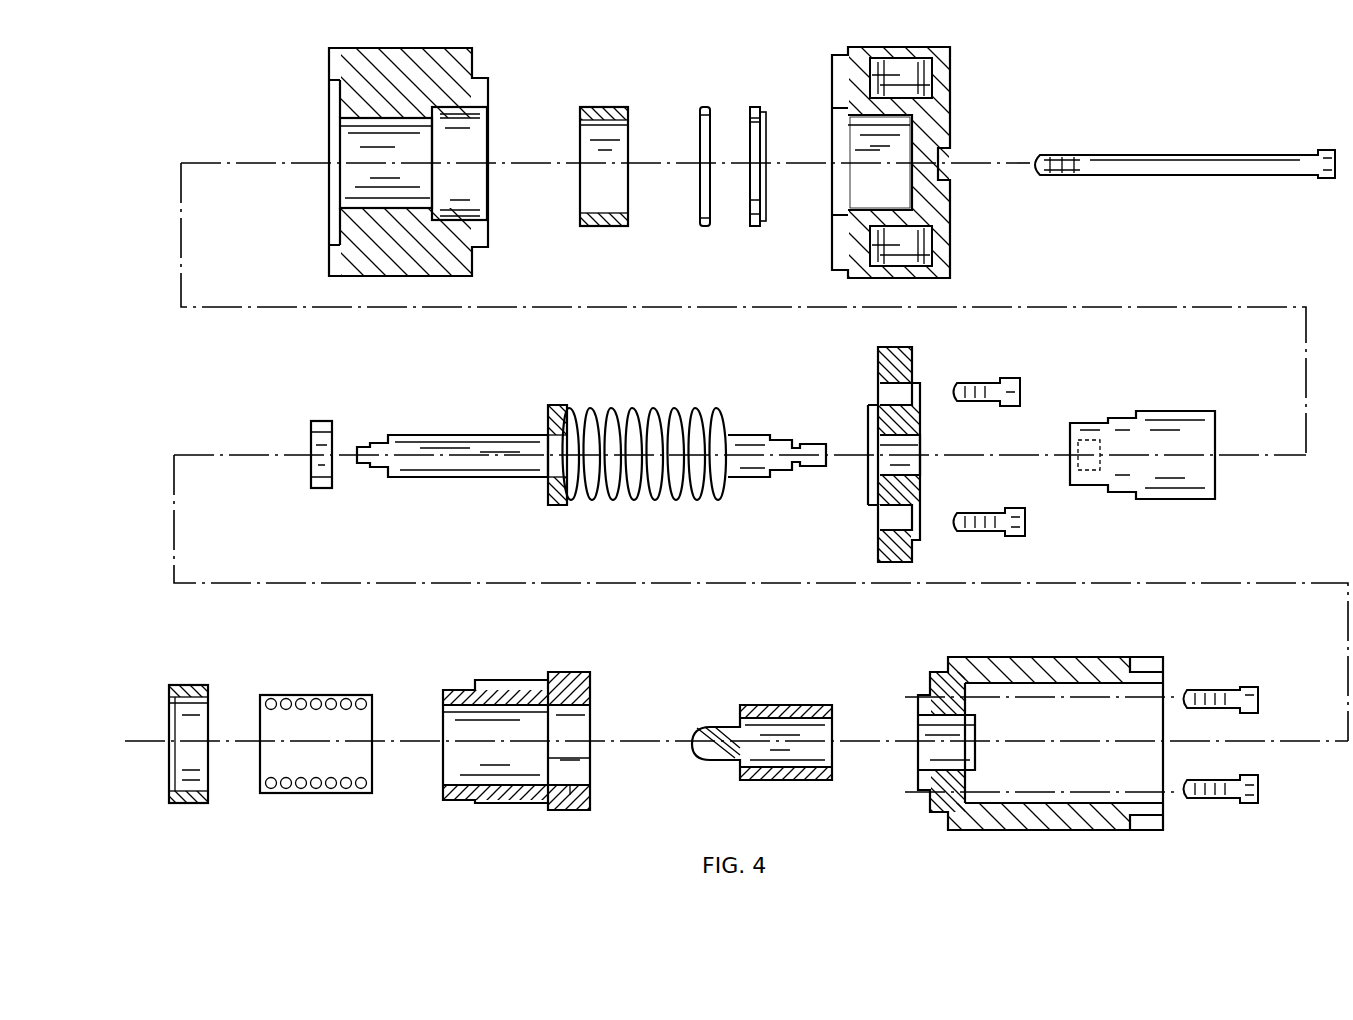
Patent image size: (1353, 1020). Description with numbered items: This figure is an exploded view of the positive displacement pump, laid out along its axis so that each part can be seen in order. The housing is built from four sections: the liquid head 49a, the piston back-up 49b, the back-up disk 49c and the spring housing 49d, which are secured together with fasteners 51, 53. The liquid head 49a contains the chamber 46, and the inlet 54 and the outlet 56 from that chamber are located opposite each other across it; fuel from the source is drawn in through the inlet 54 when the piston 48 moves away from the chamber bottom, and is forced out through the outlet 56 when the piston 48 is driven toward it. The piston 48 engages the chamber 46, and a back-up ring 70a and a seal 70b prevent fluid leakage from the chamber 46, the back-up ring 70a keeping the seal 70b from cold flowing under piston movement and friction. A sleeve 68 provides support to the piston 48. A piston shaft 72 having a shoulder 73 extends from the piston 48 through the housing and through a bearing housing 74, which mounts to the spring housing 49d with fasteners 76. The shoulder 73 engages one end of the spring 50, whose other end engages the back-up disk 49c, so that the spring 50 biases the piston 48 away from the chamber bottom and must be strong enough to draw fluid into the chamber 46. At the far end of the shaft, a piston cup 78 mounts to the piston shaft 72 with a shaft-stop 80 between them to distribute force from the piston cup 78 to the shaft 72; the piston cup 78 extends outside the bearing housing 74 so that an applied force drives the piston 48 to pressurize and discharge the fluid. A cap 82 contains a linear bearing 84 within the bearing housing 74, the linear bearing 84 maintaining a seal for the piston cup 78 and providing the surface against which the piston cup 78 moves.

The chamber 46 is at (868, 150).
The piston 48 is at (1157, 411).
The liquid head 49a is at (903, 162).
The piston back-up 49b is at (332, 65).
The back-up disk 49c is at (878, 367).
The spring housing 49d is at (1018, 660).
The spring 50 is at (638, 418).
The fastener 51 is at (1128, 158).
The fasteners 53 is at (978, 382).
The inlet 54 is at (902, 62).
The outlet 56 is at (905, 264).
The sleeve 68 is at (600, 103).
The back-up ring 70a is at (705, 103).
The seal 70b is at (760, 103).
The piston shaft 72 is at (591, 442).
The shoulder 73 is at (552, 408).
The bearing housing 74 is at (518, 684).
The fasteners 76 is at (1215, 693).
The piston cup 78 is at (780, 712).
The shaft-stop 80 is at (320, 418).
The cap 82 is at (190, 683).
The linear bearing 84 is at (318, 692).